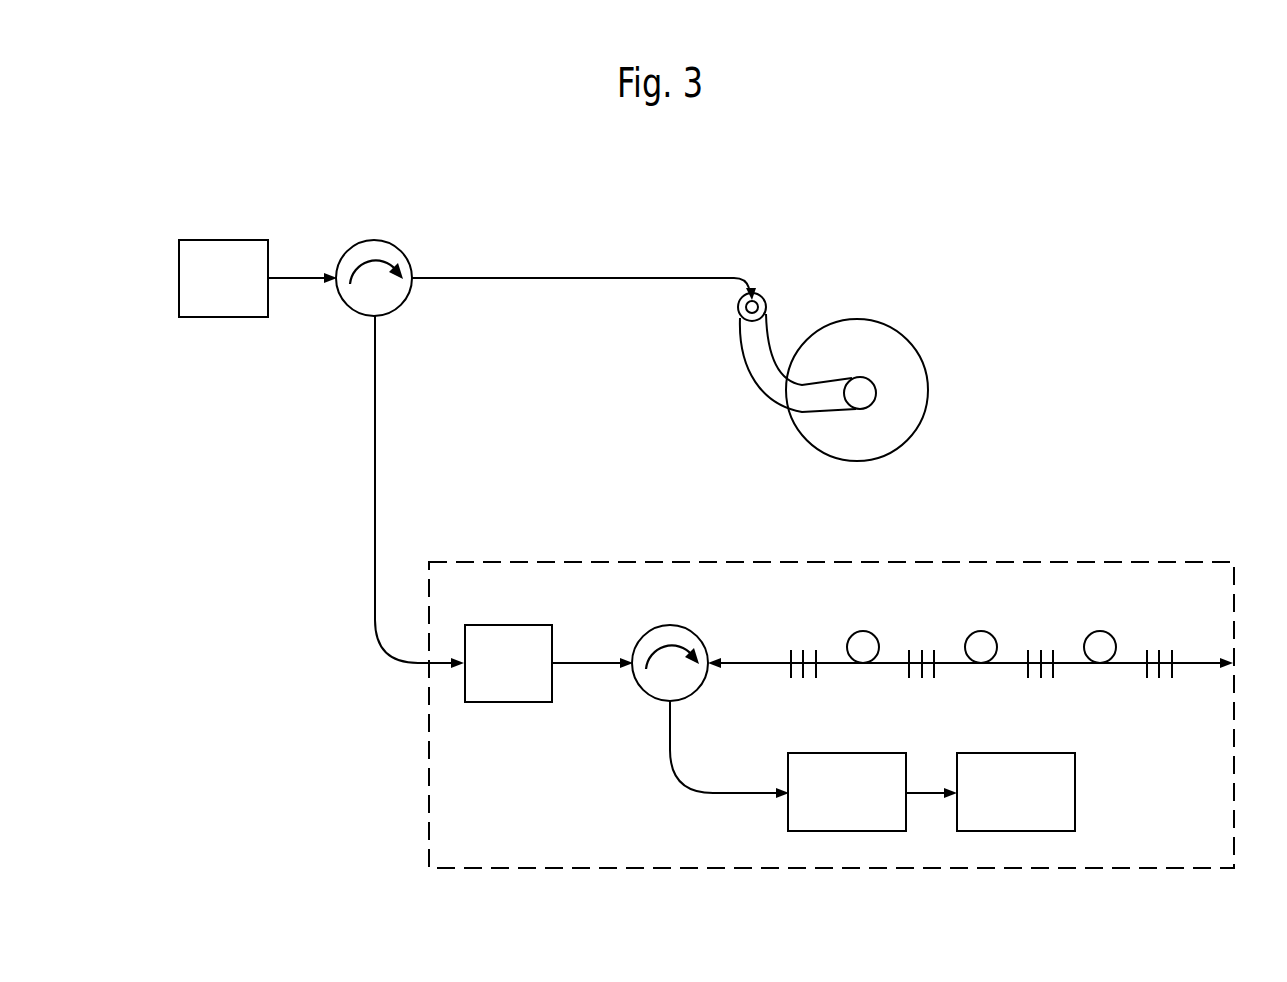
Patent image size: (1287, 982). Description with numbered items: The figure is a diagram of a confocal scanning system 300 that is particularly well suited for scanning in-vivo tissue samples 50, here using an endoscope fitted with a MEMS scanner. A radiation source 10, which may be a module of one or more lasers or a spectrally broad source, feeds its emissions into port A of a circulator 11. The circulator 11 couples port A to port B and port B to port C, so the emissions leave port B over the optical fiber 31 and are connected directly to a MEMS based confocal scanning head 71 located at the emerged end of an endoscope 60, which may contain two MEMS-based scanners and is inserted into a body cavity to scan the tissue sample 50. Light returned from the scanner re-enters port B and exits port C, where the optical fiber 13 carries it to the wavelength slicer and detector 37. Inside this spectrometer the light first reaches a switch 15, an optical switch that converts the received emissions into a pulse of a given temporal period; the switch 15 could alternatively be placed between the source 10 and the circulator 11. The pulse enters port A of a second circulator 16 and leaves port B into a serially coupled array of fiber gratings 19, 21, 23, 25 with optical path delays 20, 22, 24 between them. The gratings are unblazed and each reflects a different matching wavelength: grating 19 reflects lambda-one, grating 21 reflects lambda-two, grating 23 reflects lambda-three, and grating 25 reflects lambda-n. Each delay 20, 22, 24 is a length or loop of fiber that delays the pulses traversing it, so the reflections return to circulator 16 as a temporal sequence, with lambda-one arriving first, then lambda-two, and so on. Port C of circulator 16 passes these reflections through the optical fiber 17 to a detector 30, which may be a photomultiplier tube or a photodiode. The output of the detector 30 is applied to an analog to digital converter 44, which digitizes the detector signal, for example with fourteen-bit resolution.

The radiation source 10 is at (225, 240).
The circulator 11 is at (378, 241).
The optical fiber 31 is at (482, 278).
The MEMS based confocal scanning head 71 is at (738, 318).
The endoscope 60 is at (752, 348).
The tissue sample 50 is at (908, 340).
The confocal scanning system 300 is at (1054, 269).
The optical fiber 13 is at (375, 637).
The wavelength slicer and detector 37 is at (428, 754).
The switch 15 is at (510, 625).
The second circulator 16 is at (672, 626).
The fiber grating 19 is at (788, 690).
The optical path delay 20 is at (866, 631).
The fiber grating 21 is at (910, 690).
The optical path delay 22 is at (984, 631).
The fiber grating 23 is at (1024, 690).
The optical path delay 24 is at (1102, 631).
The fiber grating 25 is at (1146, 690).
The optical fiber 17 is at (668, 775).
The detector 30 is at (848, 753).
The analog to digital converter 44 is at (1018, 753).